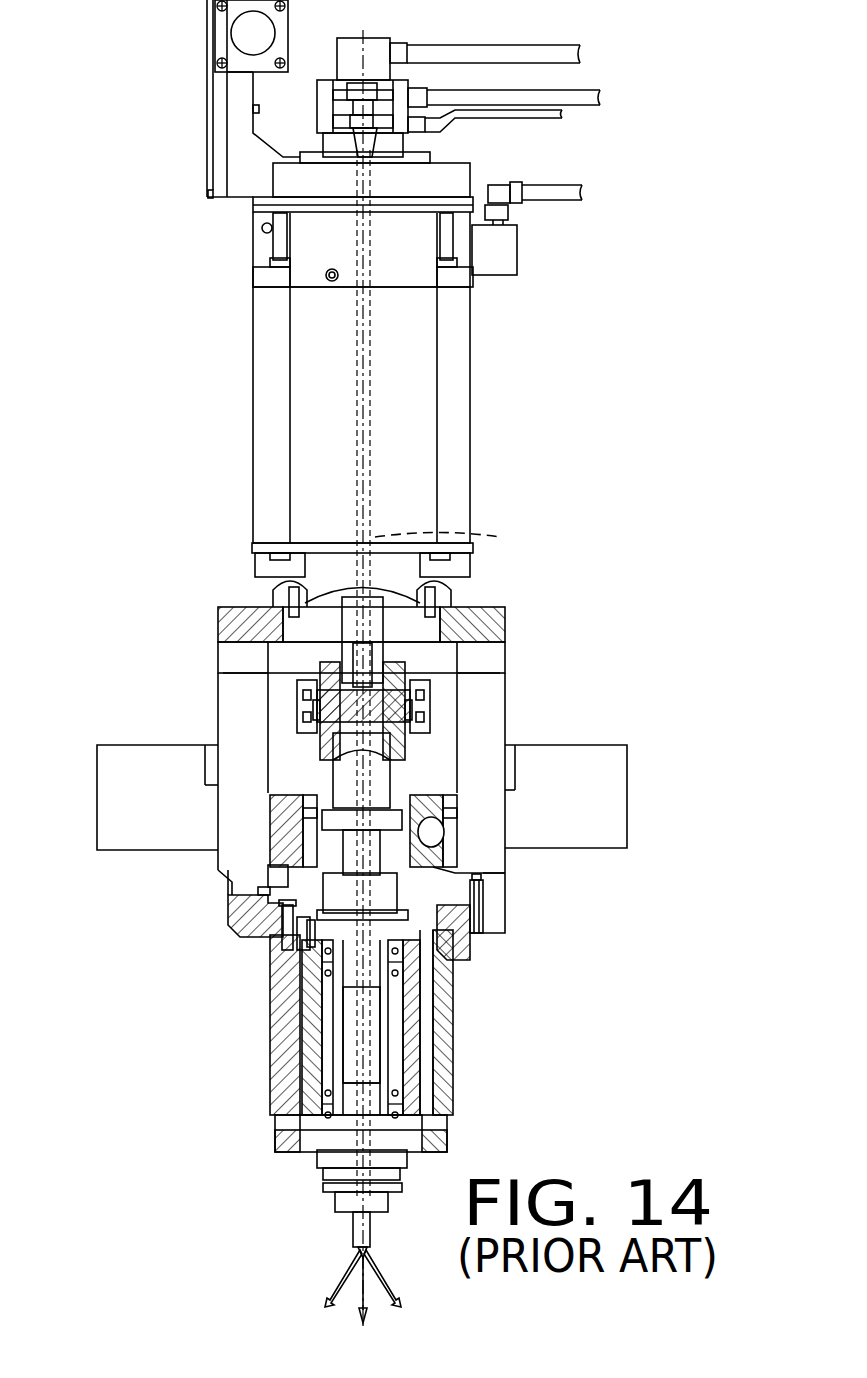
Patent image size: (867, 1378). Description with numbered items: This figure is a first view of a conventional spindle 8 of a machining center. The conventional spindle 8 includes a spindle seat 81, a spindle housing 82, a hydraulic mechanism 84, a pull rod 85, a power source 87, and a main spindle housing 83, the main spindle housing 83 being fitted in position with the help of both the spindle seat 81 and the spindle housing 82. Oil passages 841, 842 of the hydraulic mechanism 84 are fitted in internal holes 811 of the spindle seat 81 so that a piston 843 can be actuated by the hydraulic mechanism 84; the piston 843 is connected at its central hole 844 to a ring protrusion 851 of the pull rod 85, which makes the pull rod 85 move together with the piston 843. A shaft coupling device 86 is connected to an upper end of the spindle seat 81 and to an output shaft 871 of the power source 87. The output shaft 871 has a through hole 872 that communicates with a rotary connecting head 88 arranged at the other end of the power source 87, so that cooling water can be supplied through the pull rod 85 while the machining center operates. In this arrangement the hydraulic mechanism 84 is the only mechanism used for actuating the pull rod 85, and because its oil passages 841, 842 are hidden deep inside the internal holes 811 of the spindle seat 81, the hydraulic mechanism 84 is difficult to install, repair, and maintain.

The conventional spindle 8 is at (200, 540).
The rotary connecting head 88 is at (482, 133).
The power source 87 is at (458, 483).
The through hole 872 is at (468, 538).
The output shaft 871 is at (447, 618).
The pull rod 85 is at (342, 767).
The shaft coupling device 86 is at (445, 712).
The oil passage 841 is at (445, 800).
The oil passage 842 is at (440, 833).
The hydraulic mechanism 84 is at (283, 823).
The internal holes 811 is at (283, 888).
The ring protrusion 851 is at (280, 947).
The spindle seat 81 is at (562, 843).
The piston 843 is at (430, 880).
The central hole 844 is at (462, 943).
The spindle housing 82 is at (455, 1033).
The main spindle housing 83 is at (385, 1047).